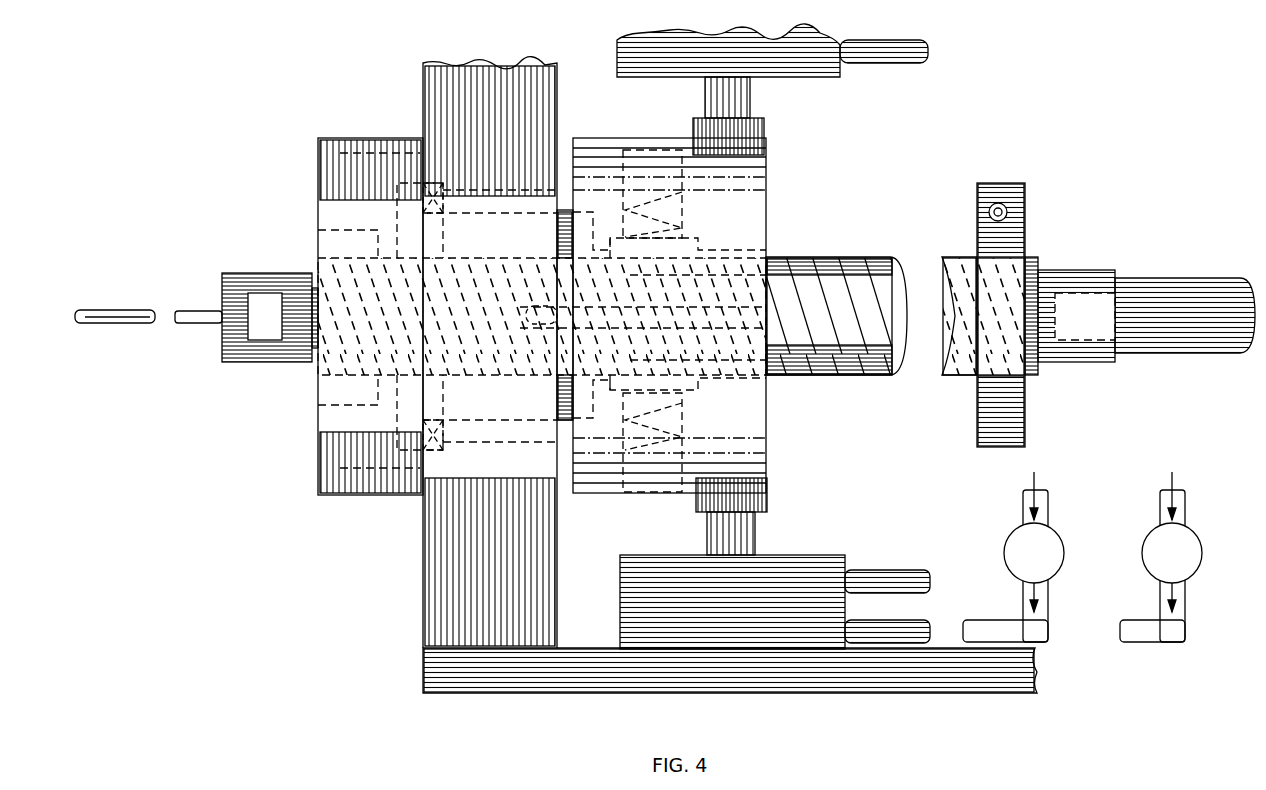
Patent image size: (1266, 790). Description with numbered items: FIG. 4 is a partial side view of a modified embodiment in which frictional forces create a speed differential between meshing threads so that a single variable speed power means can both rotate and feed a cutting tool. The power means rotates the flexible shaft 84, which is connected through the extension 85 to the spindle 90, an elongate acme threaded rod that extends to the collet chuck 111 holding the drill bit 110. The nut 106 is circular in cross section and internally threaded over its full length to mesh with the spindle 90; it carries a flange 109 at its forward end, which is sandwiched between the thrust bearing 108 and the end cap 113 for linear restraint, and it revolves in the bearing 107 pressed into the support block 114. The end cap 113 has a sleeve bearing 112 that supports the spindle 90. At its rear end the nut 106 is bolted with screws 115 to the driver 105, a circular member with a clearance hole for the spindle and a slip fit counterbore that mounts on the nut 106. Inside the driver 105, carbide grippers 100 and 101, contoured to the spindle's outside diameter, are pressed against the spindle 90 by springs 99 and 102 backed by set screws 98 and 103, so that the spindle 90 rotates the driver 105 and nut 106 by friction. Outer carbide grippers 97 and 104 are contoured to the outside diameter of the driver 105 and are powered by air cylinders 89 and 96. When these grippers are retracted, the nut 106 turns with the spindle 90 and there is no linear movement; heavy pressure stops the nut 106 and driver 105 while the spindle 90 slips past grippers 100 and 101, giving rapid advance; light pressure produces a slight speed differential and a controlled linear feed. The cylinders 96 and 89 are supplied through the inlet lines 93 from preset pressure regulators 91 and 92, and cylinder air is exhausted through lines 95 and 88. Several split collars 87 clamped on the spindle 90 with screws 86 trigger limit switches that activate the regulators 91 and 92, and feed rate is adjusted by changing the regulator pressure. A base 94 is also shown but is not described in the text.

The flexible shaft 84 is at (1185, 292).
The extension 85 is at (1092, 297).
The screws 86 is at (1063, 196).
The split collars 87 is at (1004, 299).
The exhaust line 88 is at (935, 69).
The air cylinder 89 is at (763, 61).
The spindle 90 is at (851, 296).
The pressure regulator 91 is at (1183, 557).
The pressure regulator 92 is at (1037, 557).
The inlet lines 93 is at (932, 697).
The base plate 94 is at (730, 692).
The exhaust line 95 is at (899, 563).
The air cylinder 96 is at (742, 590).
The carbide gripper 97 is at (758, 516).
The set screw 98 is at (740, 448).
The spring 99 is at (733, 426).
The carbide gripper 100 is at (716, 396).
The carbide gripper 101 is at (724, 237).
The spring 102 is at (731, 209).
The set screw 103 is at (730, 194).
The carbide gripper 104 is at (765, 116).
The driver 105 is at (669, 300).
The nut 106 is at (561, 425).
The bearing 107 is at (533, 486).
The thrust bearing 108 is at (407, 524).
The flange 109 is at (385, 470).
The drill bit 110 is at (115, 340).
The collet chuck 111 is at (246, 293).
The sleeve bearing 112 is at (297, 273).
The end cap 113 is at (380, 295).
The support block 114 is at (453, 346).
The screws 115 is at (610, 333).